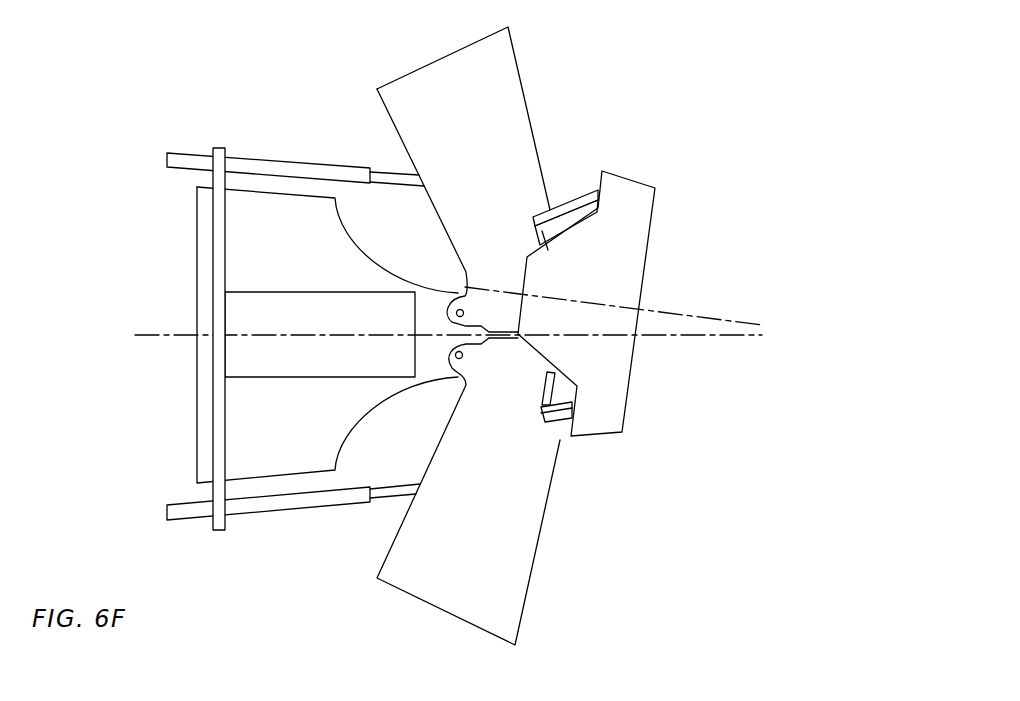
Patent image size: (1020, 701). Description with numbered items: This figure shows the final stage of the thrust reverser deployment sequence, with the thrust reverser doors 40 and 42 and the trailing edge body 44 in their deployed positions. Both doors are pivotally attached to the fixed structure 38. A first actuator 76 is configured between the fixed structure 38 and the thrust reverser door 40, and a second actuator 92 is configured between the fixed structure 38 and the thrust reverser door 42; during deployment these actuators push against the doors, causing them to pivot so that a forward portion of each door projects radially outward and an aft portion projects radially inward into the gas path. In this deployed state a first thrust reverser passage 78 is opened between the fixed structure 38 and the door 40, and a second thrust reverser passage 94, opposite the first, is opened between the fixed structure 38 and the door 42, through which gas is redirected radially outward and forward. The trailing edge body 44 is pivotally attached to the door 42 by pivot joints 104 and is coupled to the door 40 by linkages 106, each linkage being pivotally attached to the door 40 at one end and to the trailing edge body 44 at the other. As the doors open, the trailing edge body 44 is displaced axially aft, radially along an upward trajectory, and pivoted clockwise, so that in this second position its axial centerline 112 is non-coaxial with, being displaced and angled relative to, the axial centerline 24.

The axial centerline 24 is at (750, 343).
The fixed structure 38 is at (181, 382).
The thrust reverser door 40 is at (528, 72).
The thrust reverser door 42 is at (547, 560).
The trailing edge body 44 is at (630, 170).
The first actuator 76 is at (183, 160).
The first thrust reverser passage 78 is at (351, 146).
The second actuator 92 is at (187, 510).
The second thrust reverser passage 94 is at (372, 516).
The pivot joints 104 is at (568, 437).
The linkages 106 is at (567, 200).
The axial centerline 112 is at (757, 322).